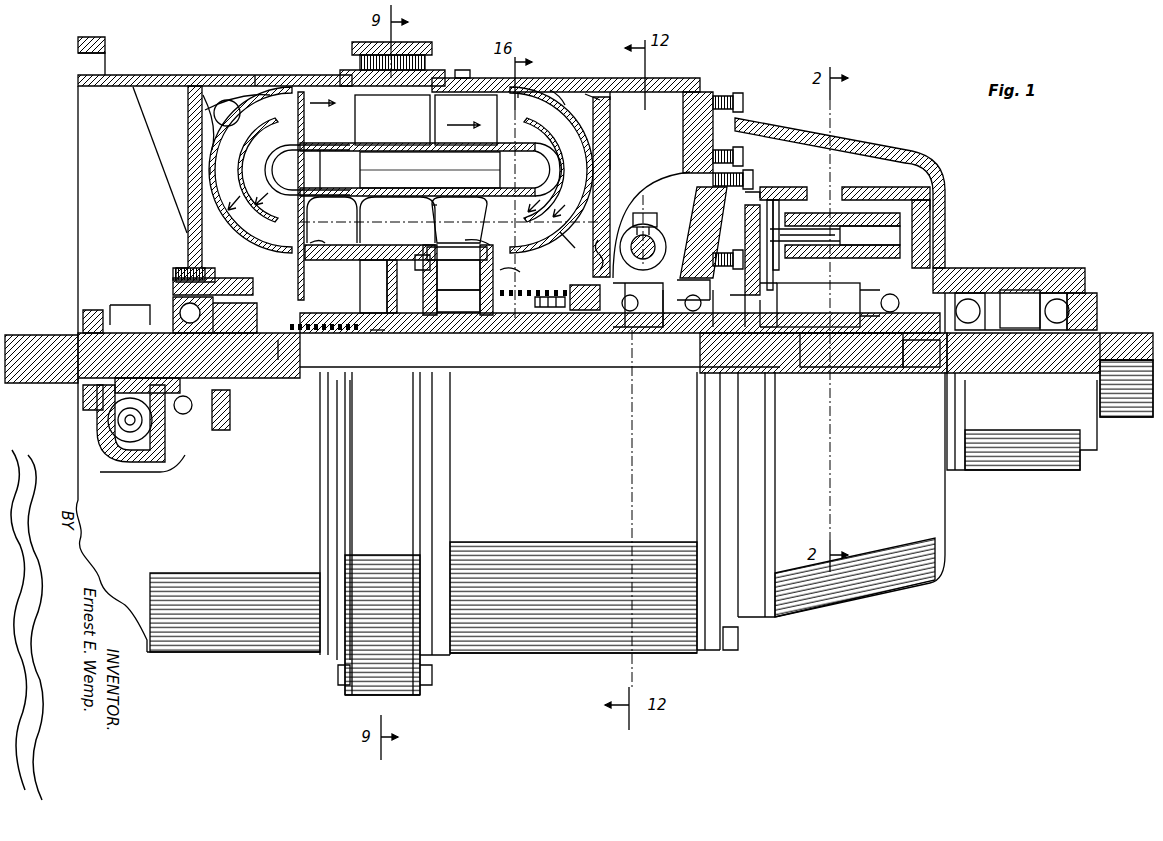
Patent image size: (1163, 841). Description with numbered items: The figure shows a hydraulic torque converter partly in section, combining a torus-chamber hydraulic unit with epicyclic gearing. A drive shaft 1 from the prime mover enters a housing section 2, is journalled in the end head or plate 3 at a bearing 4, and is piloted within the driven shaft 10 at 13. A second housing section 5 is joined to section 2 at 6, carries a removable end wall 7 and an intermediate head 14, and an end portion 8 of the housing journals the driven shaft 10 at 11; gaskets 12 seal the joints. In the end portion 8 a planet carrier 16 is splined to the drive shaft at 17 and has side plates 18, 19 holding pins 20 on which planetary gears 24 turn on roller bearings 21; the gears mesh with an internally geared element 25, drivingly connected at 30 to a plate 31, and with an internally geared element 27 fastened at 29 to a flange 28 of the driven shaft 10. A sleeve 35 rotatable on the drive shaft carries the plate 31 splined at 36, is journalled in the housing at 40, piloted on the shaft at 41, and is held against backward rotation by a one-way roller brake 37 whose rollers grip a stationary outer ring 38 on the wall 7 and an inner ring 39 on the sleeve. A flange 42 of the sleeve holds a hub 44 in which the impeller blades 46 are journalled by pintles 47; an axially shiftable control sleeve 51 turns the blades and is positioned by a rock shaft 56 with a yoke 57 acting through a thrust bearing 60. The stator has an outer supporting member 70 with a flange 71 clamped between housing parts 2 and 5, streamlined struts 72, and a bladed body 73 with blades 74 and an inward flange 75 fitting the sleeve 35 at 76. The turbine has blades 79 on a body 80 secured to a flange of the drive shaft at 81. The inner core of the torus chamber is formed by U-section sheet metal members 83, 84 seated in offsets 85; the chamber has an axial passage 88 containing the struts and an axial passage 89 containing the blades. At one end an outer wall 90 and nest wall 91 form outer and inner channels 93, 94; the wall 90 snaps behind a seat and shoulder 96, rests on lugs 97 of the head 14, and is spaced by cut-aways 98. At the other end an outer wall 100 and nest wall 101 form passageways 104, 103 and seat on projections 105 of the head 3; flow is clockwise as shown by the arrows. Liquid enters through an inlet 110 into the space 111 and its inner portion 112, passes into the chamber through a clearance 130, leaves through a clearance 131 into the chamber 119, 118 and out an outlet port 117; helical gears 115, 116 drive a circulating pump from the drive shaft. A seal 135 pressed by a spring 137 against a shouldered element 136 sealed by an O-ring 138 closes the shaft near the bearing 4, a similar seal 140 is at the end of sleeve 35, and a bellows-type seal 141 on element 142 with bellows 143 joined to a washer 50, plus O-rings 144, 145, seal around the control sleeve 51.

The drive shaft 1 is at (40, 345).
The housing section 2 is at (160, 76).
The enclosing head or plate 3 is at (188, 230).
The bearing 4 is at (135, 300).
The second housing section 5 is at (556, 90).
The connection 6 is at (410, 52).
The removable end plate or wall 7 is at (700, 188).
The end portion of housing 8 is at (845, 140).
The driven member or shaft 10 is at (1115, 345).
The journal 11 is at (1030, 305).
The sealing devices or gaskets 12 is at (760, 100).
The pilot 13 is at (930, 365).
The intermediate head 14 is at (615, 122).
The carrier 16 is at (848, 296).
The spline connection 17 is at (860, 340).
The side plate 18 is at (900, 200).
The side plate 19 is at (766, 187).
The pins 20 is at (835, 236).
The roller bearings 21 is at (815, 213).
The planetary gear 24 is at (798, 200).
The internally geared element 25 is at (740, 172).
The internally geared element 27 is at (862, 187).
The flange 28 is at (946, 230).
The connection 29 is at (932, 205).
The driving connection 30 is at (741, 185).
The plate 31 is at (745, 233).
The sleeve 35 is at (497, 335).
The spline connection 36 is at (775, 335).
The one-way acting roller brake 37 is at (740, 335).
The stationary outer ring 38 is at (700, 335).
The inner ring 39 is at (718, 335).
The journal 40 is at (665, 335).
The pilot 41 is at (432, 335).
The flange 42 is at (422, 290).
The hub element 44 is at (414, 264).
The impeller blade 46 is at (459, 220).
The pintle 47 is at (457, 279).
The washer 50 is at (520, 270).
The control sleeve 51 is at (540, 335).
The rock shaft 56 is at (633, 220).
The yoke 57 is at (604, 251).
The thrust bearing 60 is at (638, 335).
The outer supporting member 70 is at (352, 76).
The flange 71 is at (380, 42).
The struts 72 is at (370, 120).
The body 73 is at (432, 165).
The blades 74 is at (397, 220).
The inwardly extending flange 75 is at (373, 286).
The rotatable fit 76 is at (620, 340).
The turbine blades 79 is at (332, 220).
The body member 80 is at (370, 258).
The securing location 81 is at (306, 300).
The sheet metal member 83 is at (305, 150).
The sheet metal member 84 is at (430, 170).
The machined offsets 85 is at (345, 178).
The axial passage 88 is at (466, 120).
The axial passage 89 is at (426, 212).
The outer wall 90 is at (575, 110).
The dividing wall 91 is at (571, 236).
The outer channel or passage 93 is at (567, 132).
The inner channel or passage 94 is at (544, 170).
The seat and shoulder 96 is at (518, 92).
The lugs or projections 97 is at (612, 160).
The cut-away portion 98 is at (560, 100).
The outer wall 100 is at (258, 75).
The nest wall 101 is at (288, 118).
The passageway 103 is at (238, 152).
The passageway 104 is at (250, 172).
The projections 105 is at (208, 172).
The inlet 110 is at (575, 310).
The space 111 is at (605, 85).
The inner portion 112 is at (787, 290).
The helical gear 115 is at (170, 450).
The mating helical gear 116 is at (95, 310).
The outlet port 117 is at (223, 100).
The chamber 118 is at (236, 92).
The inner part 119 is at (260, 196).
The clearance 130 is at (466, 234).
The clearance 131 is at (312, 243).
The seal structure 135 is at (194, 405).
The shouldered element 136 is at (220, 330).
The spring 137 is at (280, 343).
The O-ring 138 is at (236, 293).
The seal 140 is at (377, 333).
The seal 141 is at (595, 335).
The element 142 is at (610, 335).
The bellows 143 is at (552, 335).
The O-ring seal 144 is at (478, 335).
The O-ring seal 145 is at (518, 335).